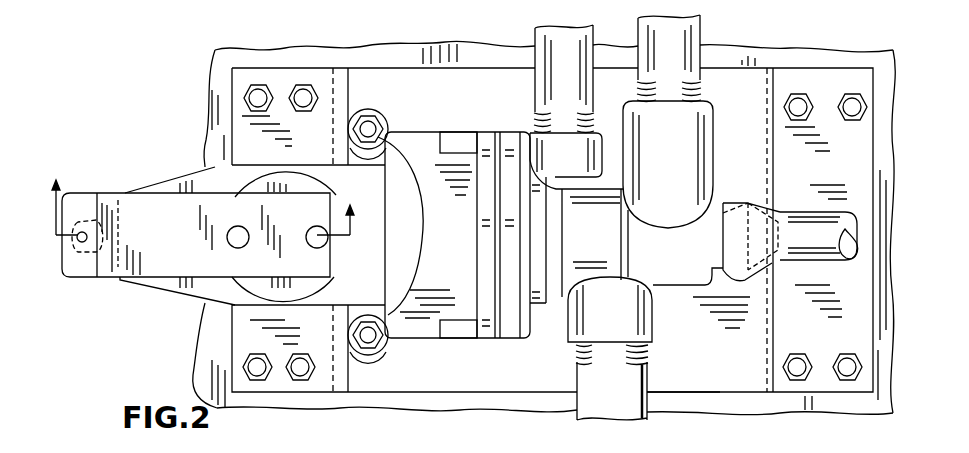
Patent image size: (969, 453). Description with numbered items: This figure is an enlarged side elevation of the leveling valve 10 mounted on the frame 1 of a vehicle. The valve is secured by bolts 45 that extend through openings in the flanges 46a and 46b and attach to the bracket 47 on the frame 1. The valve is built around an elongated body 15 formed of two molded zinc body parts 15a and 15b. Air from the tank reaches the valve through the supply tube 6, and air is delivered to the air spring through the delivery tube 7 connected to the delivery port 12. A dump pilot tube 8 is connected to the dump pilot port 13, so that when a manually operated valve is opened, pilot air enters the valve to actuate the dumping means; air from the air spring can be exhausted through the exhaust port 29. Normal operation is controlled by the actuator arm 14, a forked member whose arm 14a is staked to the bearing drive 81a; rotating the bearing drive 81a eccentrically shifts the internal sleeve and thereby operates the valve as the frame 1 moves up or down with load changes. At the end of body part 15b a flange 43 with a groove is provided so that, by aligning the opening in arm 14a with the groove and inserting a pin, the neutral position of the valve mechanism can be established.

The frame 1 is at (790, 60).
The supply tube 6 is at (700, 42).
The delivery tube 7 is at (647, 389).
The dump pilot tube 8 is at (590, 45).
The leveling valve 10 is at (474, 70).
The delivery port 12 is at (652, 334).
The dump pilot port 13 is at (582, 145).
The actuator arm 14 is at (100, 192).
The arm 14a is at (176, 268).
The elongated body 15 is at (489, 150).
The body part 15a is at (535, 325).
The body part 15b is at (428, 145).
The exhaust port 29 is at (758, 200).
The flange 43 is at (92, 255).
The bolts 45 is at (405, 226).
The flange 46a is at (385, 353).
The flange 46b is at (378, 110).
The bracket 47 is at (715, 372).
The bearing drive 81a is at (233, 188).